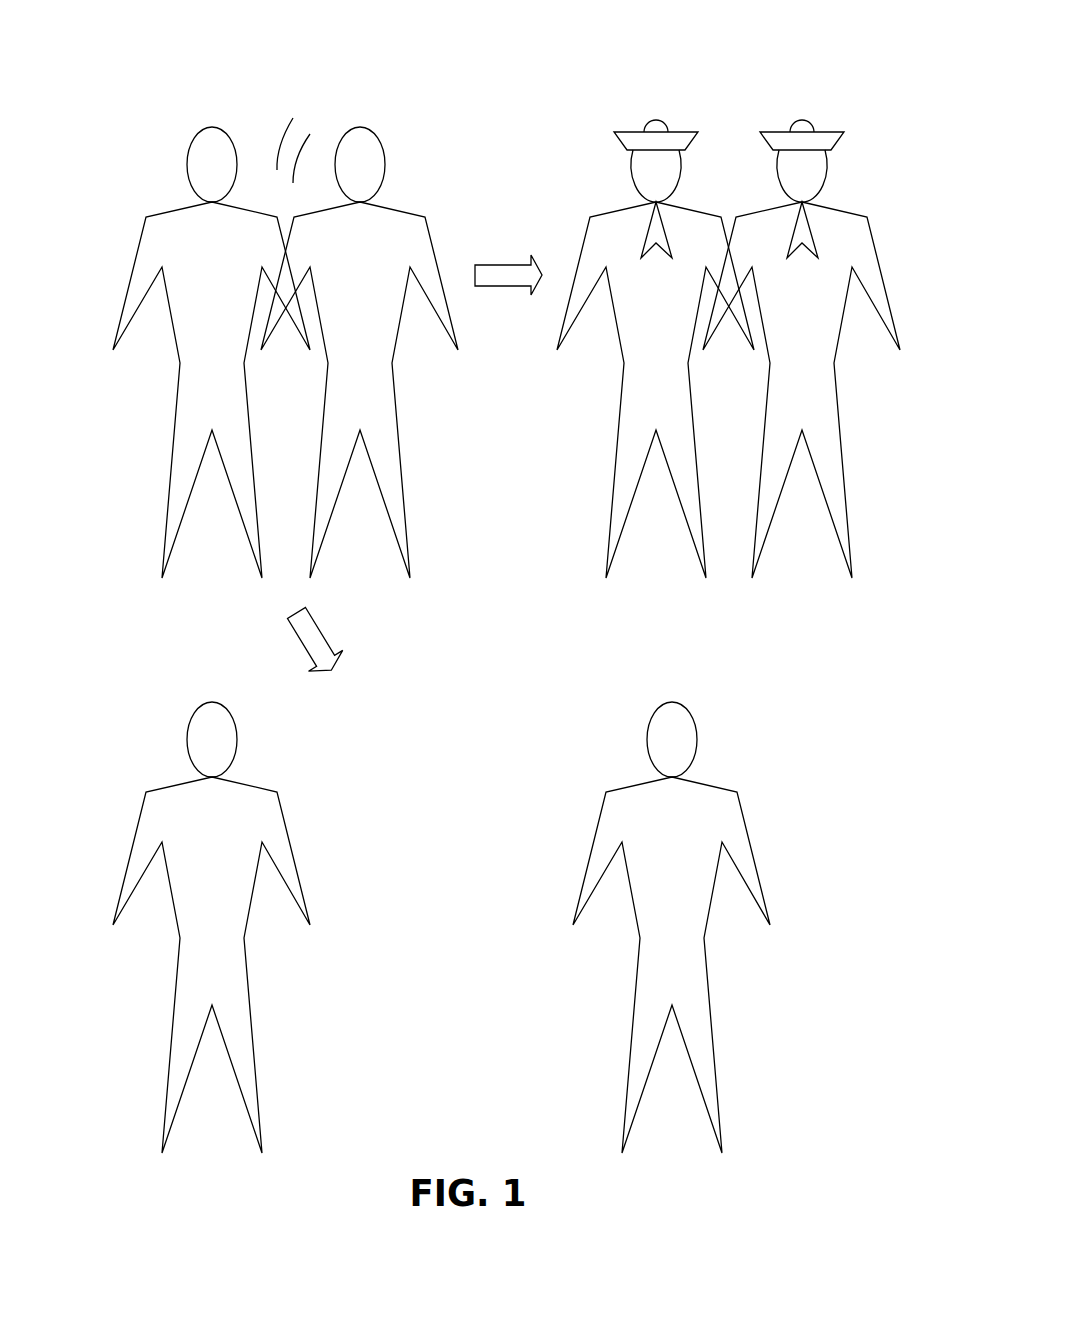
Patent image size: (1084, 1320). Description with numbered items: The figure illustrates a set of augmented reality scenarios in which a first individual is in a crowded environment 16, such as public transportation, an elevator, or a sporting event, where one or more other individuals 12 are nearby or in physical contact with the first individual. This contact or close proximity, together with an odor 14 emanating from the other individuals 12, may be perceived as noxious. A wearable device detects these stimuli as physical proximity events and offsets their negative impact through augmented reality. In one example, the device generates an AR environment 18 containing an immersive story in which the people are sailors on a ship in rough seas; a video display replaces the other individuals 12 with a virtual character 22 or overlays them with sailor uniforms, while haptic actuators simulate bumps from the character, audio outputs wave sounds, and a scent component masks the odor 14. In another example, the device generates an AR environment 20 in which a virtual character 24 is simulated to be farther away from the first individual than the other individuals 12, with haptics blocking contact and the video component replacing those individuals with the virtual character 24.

The other individuals 12 is at (360, 127).
The odor 14 is at (286, 97).
The crowded environment 16 is at (274, 30).
The AR environment 18 is at (702, 30).
The AR environment 20 is at (464, 721).
The virtual character 22 is at (828, 167).
The virtual character 24 is at (697, 737).